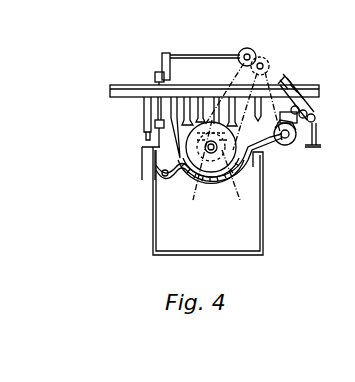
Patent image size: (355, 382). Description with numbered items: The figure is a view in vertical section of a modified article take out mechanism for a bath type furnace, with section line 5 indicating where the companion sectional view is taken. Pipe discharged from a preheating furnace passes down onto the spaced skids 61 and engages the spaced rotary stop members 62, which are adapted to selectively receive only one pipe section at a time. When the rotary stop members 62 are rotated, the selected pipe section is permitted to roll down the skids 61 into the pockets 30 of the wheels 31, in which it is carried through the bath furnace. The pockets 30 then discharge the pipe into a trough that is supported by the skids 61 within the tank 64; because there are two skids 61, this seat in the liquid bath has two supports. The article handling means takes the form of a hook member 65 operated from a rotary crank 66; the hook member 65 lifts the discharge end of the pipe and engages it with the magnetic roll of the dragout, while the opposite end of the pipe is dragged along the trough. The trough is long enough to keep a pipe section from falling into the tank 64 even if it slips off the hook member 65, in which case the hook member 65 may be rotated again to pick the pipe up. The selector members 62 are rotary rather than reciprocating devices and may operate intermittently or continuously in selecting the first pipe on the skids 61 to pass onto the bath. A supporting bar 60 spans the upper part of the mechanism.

The section line 5- 5 is at (153, 62).
The pockets 30 is at (218, 183).
The wheels 31 is at (201, 182).
The supporting bar 60 is at (110, 92).
The skids 61 is at (268, 140).
The rotary stop members 62 is at (302, 132).
The tank 64 is at (263, 200).
The hook member 65 is at (156, 73).
The rotary crank 66 is at (170, 66).